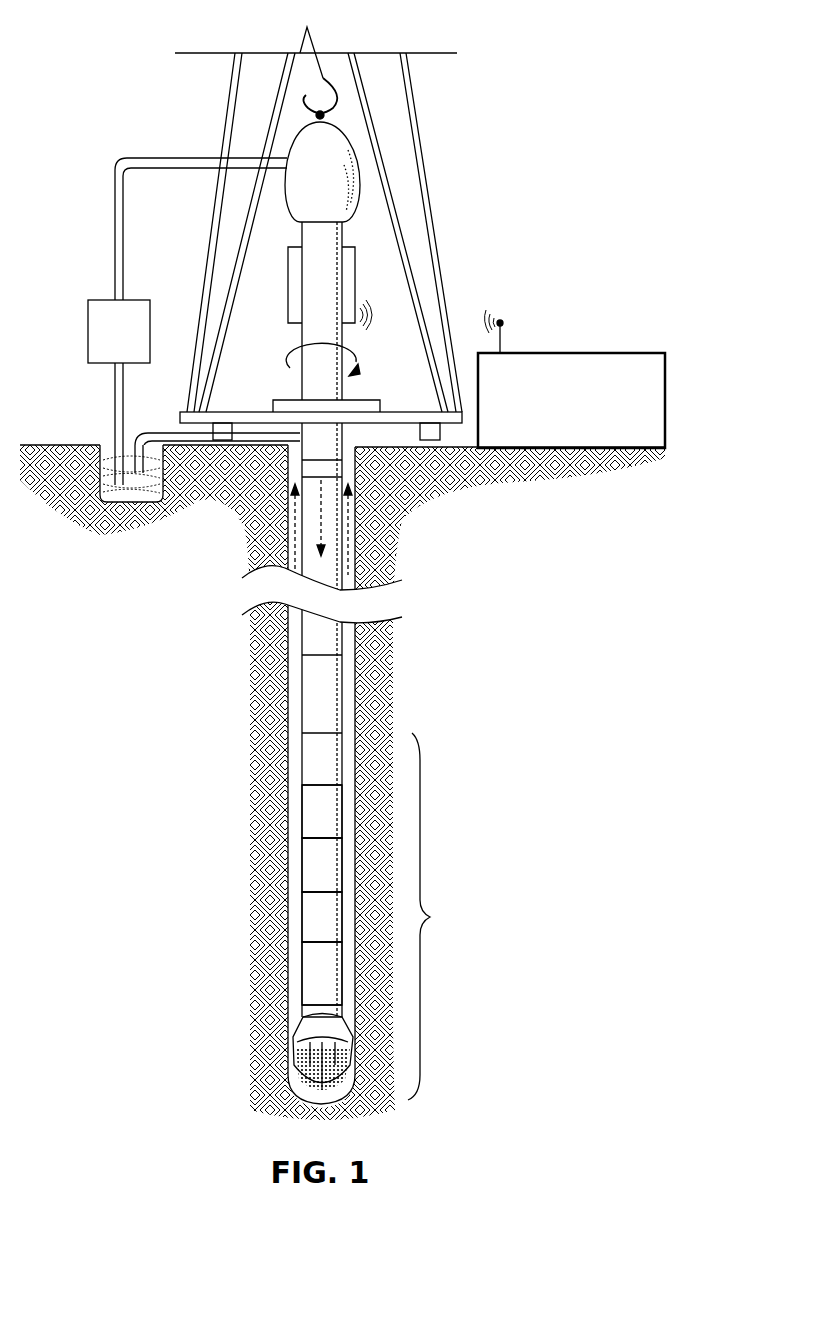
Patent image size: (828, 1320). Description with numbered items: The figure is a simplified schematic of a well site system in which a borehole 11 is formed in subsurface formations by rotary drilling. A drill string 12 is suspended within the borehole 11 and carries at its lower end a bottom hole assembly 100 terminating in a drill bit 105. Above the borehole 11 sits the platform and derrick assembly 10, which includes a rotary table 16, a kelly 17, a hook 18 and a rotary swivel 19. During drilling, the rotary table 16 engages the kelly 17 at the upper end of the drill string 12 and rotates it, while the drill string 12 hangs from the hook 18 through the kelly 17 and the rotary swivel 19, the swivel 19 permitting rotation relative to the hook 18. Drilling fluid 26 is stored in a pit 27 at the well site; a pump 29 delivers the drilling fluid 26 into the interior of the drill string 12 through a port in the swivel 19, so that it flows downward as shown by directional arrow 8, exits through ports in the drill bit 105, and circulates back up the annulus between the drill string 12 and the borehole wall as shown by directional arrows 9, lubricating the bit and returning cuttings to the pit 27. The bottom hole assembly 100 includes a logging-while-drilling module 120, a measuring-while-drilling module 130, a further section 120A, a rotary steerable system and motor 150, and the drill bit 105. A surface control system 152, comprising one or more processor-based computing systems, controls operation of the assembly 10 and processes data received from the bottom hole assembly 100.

The platform and derrick assembly 10 is at (437, 142).
The hook 18 is at (321, 80).
The rotary swivel 19 is at (297, 205).
The kelly 17 is at (310, 394).
The rotary table 16 is at (365, 400).
The borehole 11 is at (346, 446).
The drill string 12 is at (320, 440).
The pit 27 is at (107, 446).
The pump 29 is at (102, 365).
The drilling fluid 26 is at (132, 497).
The directional arrows 9 is at (293, 508).
The directional arrow 8 is at (320, 525).
The control system 152 is at (613, 353).
The bottom hole assembly 100 is at (440, 916).
The logging-while-drilling module 120 is at (310, 812).
The measuring-while-drilling module 130 is at (303, 863).
The drill pipe section 120A is at (310, 918).
The rotary steerable system and motor 150 is at (310, 977).
The drill bit 105 is at (300, 1048).